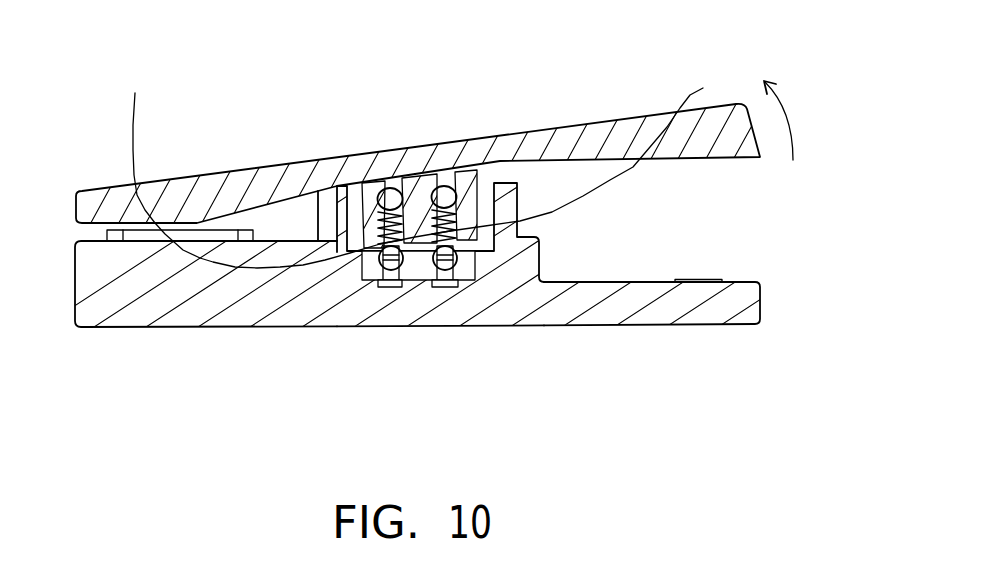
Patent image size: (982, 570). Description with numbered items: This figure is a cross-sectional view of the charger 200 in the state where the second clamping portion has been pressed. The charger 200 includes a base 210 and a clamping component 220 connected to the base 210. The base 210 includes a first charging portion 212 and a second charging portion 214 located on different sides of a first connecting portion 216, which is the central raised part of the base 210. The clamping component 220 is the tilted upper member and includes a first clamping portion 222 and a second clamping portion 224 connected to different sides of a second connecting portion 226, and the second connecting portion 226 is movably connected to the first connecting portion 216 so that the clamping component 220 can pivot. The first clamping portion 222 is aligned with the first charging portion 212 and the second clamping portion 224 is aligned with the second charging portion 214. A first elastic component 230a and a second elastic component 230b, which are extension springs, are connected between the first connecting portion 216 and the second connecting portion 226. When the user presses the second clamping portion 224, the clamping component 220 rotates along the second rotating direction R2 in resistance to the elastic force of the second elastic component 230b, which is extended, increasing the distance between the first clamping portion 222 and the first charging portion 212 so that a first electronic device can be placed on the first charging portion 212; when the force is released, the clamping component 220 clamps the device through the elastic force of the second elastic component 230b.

The charger 200 is at (825, 414).
The base 210 is at (500, 312).
The first charging portion 212 is at (634, 339).
The second charging portion 214 is at (213, 305).
The first connecting portion 216 is at (417, 268).
The clamping component 220 is at (450, 125).
The first clamping portion 222 is at (618, 143).
The second clamping portion 224 is at (203, 203).
The second connecting portion 226 is at (421, 177).
The first elastic component 230a is at (281, 161).
The second elastic component 230b is at (591, 140).
The second rotating direction R2 is at (795, 120).